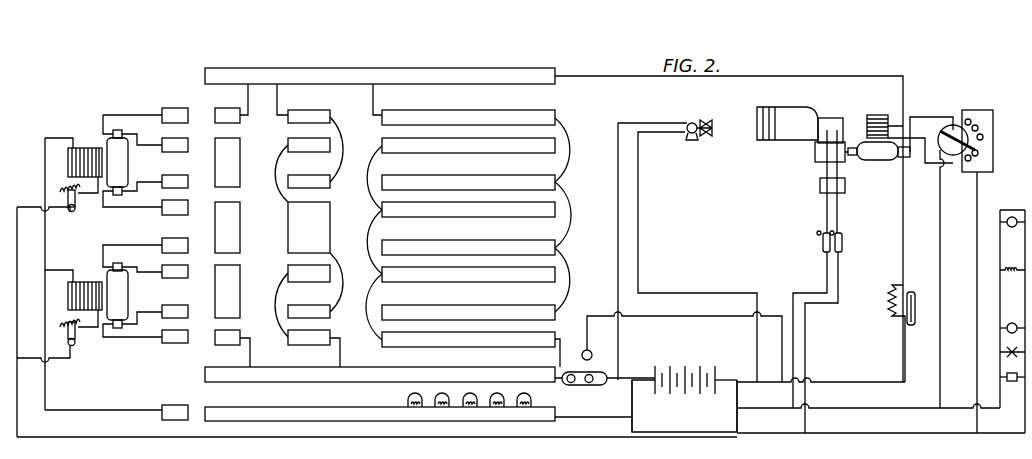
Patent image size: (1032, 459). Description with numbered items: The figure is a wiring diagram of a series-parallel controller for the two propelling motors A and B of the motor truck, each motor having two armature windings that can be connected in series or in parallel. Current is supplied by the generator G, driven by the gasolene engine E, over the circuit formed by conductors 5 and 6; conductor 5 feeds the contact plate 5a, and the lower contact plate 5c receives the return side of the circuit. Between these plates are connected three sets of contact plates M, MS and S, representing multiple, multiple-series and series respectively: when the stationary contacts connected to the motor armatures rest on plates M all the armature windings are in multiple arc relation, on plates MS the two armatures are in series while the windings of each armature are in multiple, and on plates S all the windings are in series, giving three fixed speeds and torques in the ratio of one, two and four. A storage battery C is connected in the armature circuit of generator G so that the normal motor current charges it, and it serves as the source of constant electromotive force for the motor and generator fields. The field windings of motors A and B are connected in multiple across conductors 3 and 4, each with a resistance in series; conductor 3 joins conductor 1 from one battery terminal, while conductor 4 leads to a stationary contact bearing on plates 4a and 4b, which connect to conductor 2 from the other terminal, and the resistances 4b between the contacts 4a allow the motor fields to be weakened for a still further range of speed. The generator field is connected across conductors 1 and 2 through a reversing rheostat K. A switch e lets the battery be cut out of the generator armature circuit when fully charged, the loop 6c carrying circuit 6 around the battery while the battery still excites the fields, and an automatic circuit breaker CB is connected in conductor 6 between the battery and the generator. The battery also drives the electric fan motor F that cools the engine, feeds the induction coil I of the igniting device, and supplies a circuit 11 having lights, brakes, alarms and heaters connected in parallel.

The conductor 1 is at (730, 406).
The conductor 2 is at (639, 406).
The conductor 3 is at (377, 432).
The conductor 4 is at (116, 408).
The contact plates 4a is at (418, 407).
The resistances 4b is at (469, 398).
The conductor 5 is at (729, 222).
The contact plate 5a is at (391, 84).
The bus bar 5c is at (533, 373).
The conductor 6 is at (881, 399).
The loop 6c is at (687, 252).
The circuit 11 is at (1008, 312).
The propelling motor A is at (124, 161).
The propelling motor B is at (124, 292).
The storage battery C is at (684, 399).
The gasolene engine E is at (802, 170).
The electric fan motor F is at (699, 140).
The generator G is at (900, 147).
The induction coil I is at (820, 187).
The controller switch K is at (972, 271).
The series contact plates S is at (232, 225).
The multiple contact plates M is at (468, 225).
The multiple-series contact plates MS is at (309, 225).
The automatic circuit breaker CB is at (898, 329).
The connector e is at (668, 348).